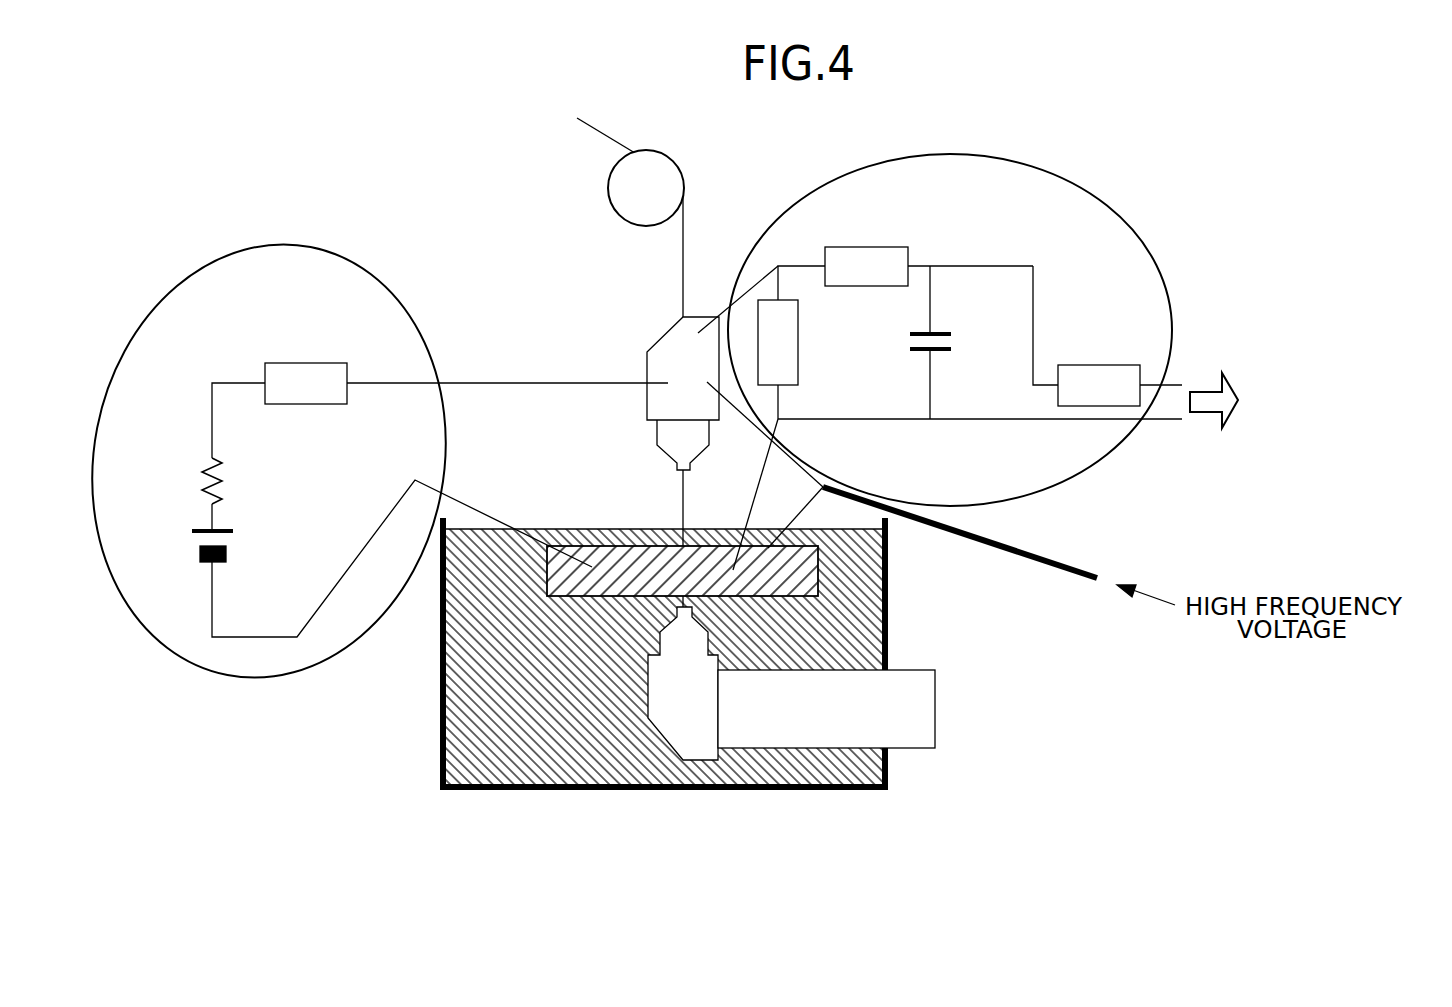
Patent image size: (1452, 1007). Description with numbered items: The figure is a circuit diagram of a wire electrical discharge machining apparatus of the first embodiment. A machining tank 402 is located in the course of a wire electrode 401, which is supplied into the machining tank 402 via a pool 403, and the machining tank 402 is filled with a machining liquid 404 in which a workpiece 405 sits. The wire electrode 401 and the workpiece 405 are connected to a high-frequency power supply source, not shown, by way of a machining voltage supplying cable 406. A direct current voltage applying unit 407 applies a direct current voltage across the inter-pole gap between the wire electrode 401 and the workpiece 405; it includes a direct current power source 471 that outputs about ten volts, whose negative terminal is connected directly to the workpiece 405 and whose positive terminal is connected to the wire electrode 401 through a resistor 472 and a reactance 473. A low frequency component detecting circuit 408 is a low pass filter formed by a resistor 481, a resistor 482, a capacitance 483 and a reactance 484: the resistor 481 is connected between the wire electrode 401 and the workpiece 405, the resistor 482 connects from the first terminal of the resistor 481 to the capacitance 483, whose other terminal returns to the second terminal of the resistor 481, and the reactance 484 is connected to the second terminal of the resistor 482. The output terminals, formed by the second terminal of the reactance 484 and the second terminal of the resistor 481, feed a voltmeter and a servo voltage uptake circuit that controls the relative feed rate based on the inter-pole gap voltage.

The wire electrode 401 is at (682, 278).
The machining tank 402 is at (517, 787).
The pool 403 is at (608, 185).
The machining liquid 404 is at (622, 787).
The workpiece 405 is at (620, 573).
The machining voltage supplying cable 406 is at (995, 548).
The direct current voltage applying unit 407 is at (362, 448).
The low frequency component detecting circuit 408 is at (1073, 330).
The direct current power source 471 is at (192, 553).
The resistor 472 is at (203, 468).
The reactance 473 is at (308, 363).
The resistor 481 is at (798, 355).
The resistor 482 is at (865, 247).
The capacitance 483 is at (942, 355).
The reactance 484 is at (1100, 365).